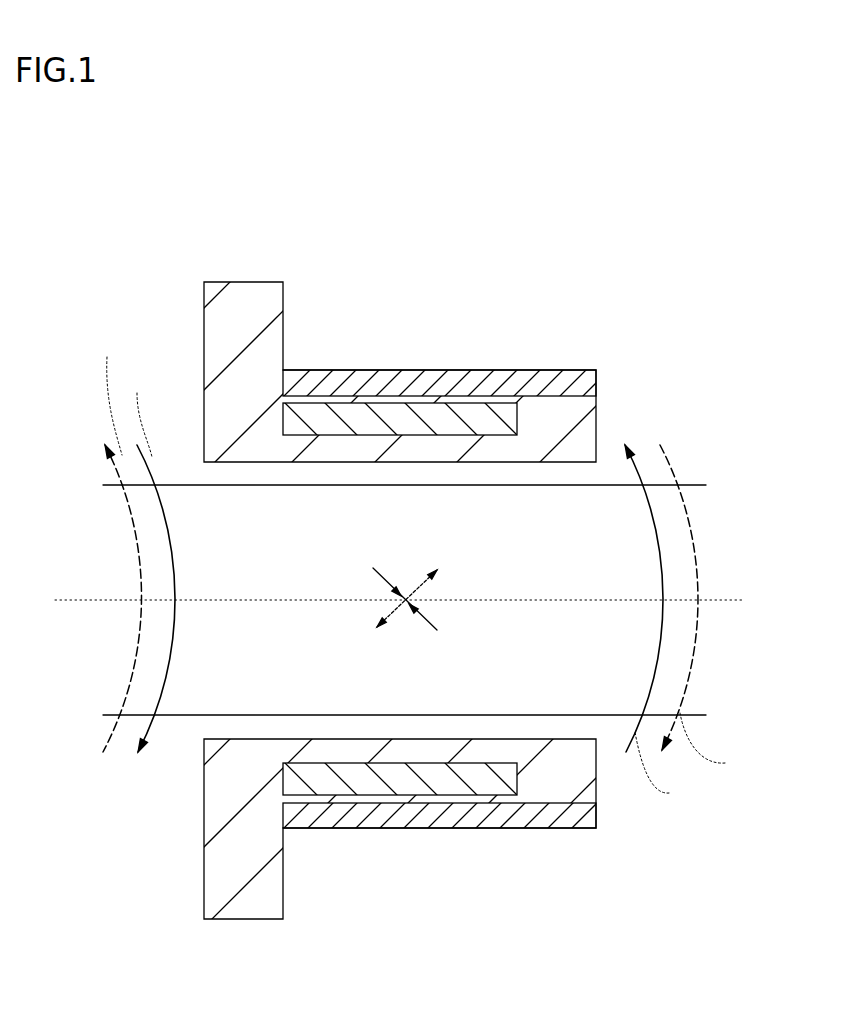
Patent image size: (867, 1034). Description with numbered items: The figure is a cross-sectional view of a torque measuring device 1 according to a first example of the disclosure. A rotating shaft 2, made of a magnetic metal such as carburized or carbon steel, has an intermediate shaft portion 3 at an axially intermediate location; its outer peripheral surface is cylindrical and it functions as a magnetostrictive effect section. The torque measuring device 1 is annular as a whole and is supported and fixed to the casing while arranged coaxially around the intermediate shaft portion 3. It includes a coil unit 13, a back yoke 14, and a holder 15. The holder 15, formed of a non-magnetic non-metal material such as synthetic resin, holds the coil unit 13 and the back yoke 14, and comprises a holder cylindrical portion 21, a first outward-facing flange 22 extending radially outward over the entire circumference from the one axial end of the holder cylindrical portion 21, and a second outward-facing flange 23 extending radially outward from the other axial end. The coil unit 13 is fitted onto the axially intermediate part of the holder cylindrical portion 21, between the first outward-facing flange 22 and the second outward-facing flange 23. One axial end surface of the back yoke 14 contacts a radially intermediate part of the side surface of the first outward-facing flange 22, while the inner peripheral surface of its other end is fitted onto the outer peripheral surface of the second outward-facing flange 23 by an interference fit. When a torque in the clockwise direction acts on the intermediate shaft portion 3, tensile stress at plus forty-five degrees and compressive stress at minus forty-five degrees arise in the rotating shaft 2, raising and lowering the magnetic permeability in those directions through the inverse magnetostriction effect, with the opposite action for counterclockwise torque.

The torque measuring device 1 is at (542, 257).
The rotating shaft 2 is at (672, 520).
The intermediate shaft portion 3 is at (197, 675).
The coil unit 13 is at (382, 413).
The back yoke 14 is at (457, 383).
The holder 15 is at (228, 348).
The holder cylindrical portion 21 is at (402, 750).
The first outward-facing flange 22 is at (243, 883).
The second outward-facing flange 23 is at (562, 787).